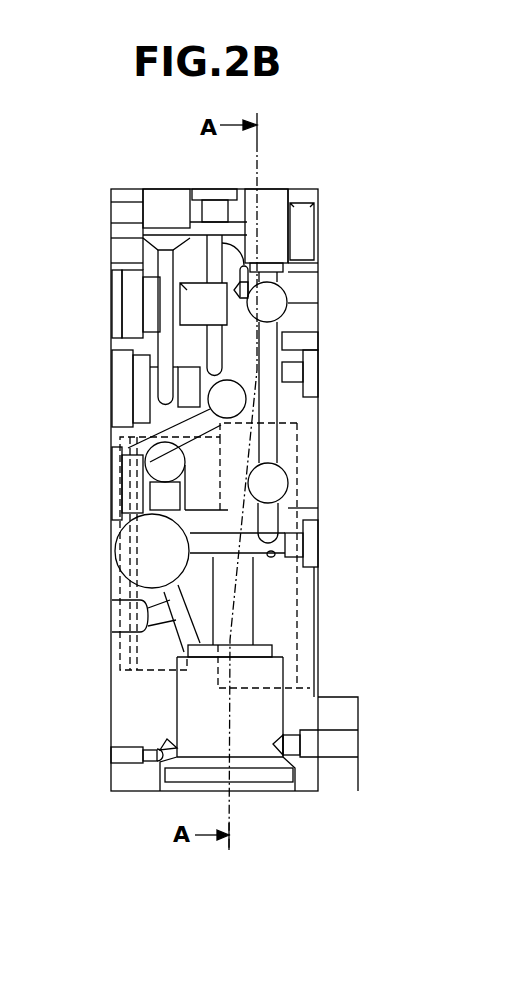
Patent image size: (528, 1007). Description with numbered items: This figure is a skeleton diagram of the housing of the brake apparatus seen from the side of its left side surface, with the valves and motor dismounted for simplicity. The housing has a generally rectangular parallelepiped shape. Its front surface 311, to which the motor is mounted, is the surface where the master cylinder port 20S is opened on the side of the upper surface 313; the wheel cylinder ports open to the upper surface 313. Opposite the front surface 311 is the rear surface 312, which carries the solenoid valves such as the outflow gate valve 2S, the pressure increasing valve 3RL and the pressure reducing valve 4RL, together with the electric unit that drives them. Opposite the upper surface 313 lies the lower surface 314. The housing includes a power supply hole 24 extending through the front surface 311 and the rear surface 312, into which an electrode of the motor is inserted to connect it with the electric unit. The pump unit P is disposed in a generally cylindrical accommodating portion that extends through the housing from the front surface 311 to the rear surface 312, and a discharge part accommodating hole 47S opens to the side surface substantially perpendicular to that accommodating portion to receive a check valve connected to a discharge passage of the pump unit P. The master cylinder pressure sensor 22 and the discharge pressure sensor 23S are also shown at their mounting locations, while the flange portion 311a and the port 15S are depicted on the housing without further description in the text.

The upper surface 313 is at (240, 189).
The master cylinder pressure sensor 22 is at (112, 253).
The pressure increasing valve 3RL is at (112, 302).
The power supply hole 24 is at (147, 346).
The pressure reducing valve 4RL is at (112, 402).
The outflow gate valve 2S is at (112, 480).
The discharge part accommodating hole 47S is at (112, 545).
The discharge pressure sensor 23S is at (112, 610).
The rear surface 312 is at (112, 697).
The lower surface 314 is at (135, 792).
The supply port 15S is at (275, 791).
The housing flange 311a is at (358, 717).
The pump unit P is at (305, 452).
The front surface 311 is at (318, 312).
The master cylinder port 20S is at (318, 233).